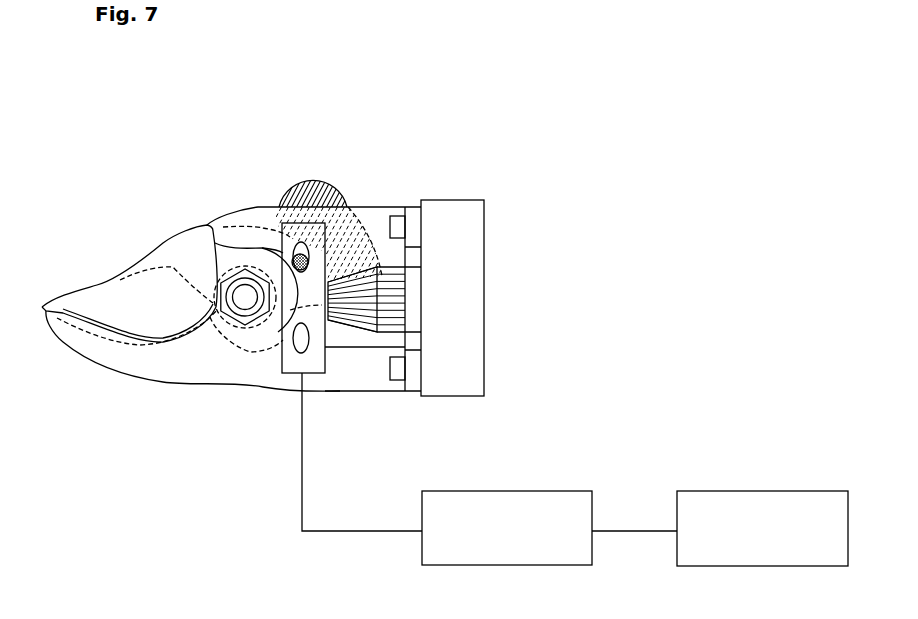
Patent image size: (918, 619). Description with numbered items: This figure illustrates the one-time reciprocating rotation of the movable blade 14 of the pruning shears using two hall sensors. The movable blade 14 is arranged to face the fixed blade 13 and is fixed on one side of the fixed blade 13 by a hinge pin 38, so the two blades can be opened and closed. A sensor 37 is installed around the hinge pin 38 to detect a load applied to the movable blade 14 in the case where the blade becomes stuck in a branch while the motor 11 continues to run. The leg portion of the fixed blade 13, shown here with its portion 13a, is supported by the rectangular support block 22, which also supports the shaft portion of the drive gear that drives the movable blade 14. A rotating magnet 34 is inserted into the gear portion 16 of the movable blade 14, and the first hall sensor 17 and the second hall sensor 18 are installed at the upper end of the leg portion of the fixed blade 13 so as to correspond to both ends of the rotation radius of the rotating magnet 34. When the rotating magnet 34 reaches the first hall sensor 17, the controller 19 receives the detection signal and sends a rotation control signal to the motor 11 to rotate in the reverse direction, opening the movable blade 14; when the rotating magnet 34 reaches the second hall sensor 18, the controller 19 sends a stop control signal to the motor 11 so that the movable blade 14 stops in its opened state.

The motor 11 is at (778, 490).
The fixed blade 13 is at (93, 352).
The housing 13a is at (372, 207).
The movable blade 14 is at (95, 293).
The gear portion 16 is at (313, 180).
The first hall sensor 17 is at (297, 260).
The second hall sensor 18 is at (297, 353).
The controller 19 is at (540, 490).
The support block 22 is at (457, 198).
The rotating magnet 34 is at (213, 248).
The sensor 37 is at (218, 312).
The hinge pin 38 is at (245, 305).